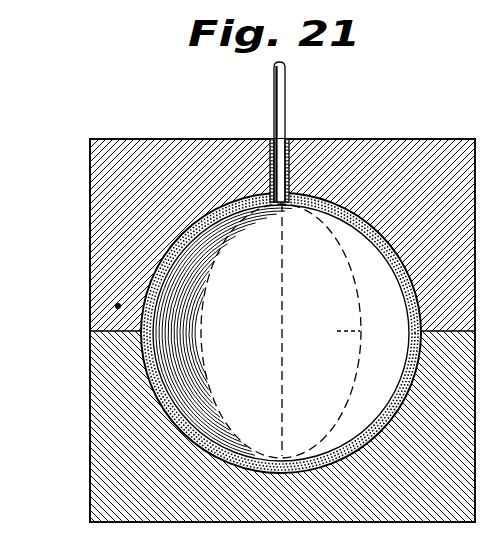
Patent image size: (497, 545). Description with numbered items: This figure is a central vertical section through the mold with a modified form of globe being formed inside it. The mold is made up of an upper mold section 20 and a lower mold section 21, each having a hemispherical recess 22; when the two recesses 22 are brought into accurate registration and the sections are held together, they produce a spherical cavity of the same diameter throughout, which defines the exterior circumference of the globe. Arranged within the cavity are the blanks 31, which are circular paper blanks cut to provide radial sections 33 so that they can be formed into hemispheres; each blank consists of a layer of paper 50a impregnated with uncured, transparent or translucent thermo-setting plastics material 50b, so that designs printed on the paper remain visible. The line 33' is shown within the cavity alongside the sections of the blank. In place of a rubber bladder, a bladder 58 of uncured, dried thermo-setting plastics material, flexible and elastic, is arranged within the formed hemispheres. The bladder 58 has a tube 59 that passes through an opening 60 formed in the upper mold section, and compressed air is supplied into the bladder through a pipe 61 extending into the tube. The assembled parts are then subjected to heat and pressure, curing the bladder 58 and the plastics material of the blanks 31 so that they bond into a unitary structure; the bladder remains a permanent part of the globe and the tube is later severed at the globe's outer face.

The mold section 20 is at (125, 217).
The mold section 21 is at (100, 373).
The hemispherical recesses 22 is at (145, 298).
The blanks 31 is at (160, 300).
The radial sections 33 is at (296, 331).
The ball axis line 33' is at (321, 329).
The bladder 58 is at (170, 397).
The paper 50a is at (205, 438).
The thermo-setting plastics material 50b is at (177, 428).
The tube 59 is at (290, 137).
The opening 60 is at (290, 165).
The pipe 61 is at (283, 100).